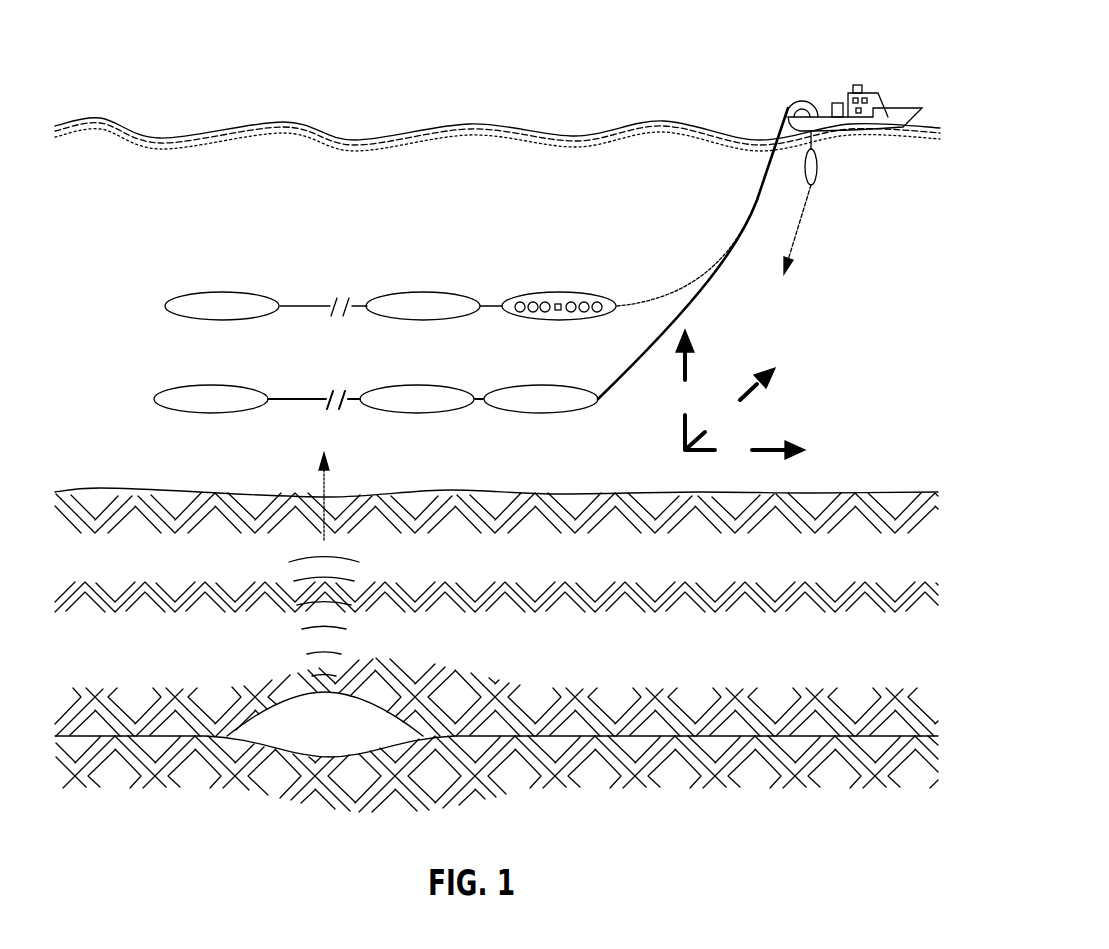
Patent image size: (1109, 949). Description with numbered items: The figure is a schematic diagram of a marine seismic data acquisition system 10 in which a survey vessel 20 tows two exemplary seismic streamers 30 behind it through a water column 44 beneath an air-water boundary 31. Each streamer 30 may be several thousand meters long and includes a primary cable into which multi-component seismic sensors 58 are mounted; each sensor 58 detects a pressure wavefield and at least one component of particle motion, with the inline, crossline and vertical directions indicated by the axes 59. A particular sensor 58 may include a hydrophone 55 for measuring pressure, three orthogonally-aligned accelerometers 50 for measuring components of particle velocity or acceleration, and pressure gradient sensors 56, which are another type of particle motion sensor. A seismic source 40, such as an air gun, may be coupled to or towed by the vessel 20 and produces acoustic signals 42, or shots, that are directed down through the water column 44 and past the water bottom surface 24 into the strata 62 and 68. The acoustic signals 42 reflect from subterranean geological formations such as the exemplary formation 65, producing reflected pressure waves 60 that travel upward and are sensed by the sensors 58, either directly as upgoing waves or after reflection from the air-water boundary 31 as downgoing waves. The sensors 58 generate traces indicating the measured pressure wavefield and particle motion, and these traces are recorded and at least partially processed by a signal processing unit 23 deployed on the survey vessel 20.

The marine seismic data acquisition system 10 is at (268, 80).
The survey vessel 20 is at (905, 110).
The signal processing unit 23 is at (838, 103).
The water bottom surface 24 is at (815, 493).
The seismic streamer 30 is at (754, 212).
The air-water boundary 31 is at (440, 118).
The seismic source 40 is at (817, 167).
The acoustic signal 42 is at (800, 215).
The water column 44 is at (846, 334).
The accelerometers 50 is at (534, 302).
The hydrophone 55 is at (558, 314).
The pressure gradient sensors 56 is at (588, 302).
The multi-component seismic sensor 58 is at (232, 292).
The axes 59 is at (672, 460).
The pressure waves 60 is at (283, 638).
The strata 62 is at (501, 707).
The formation 65 is at (336, 740).
The strata 68 is at (501, 787).